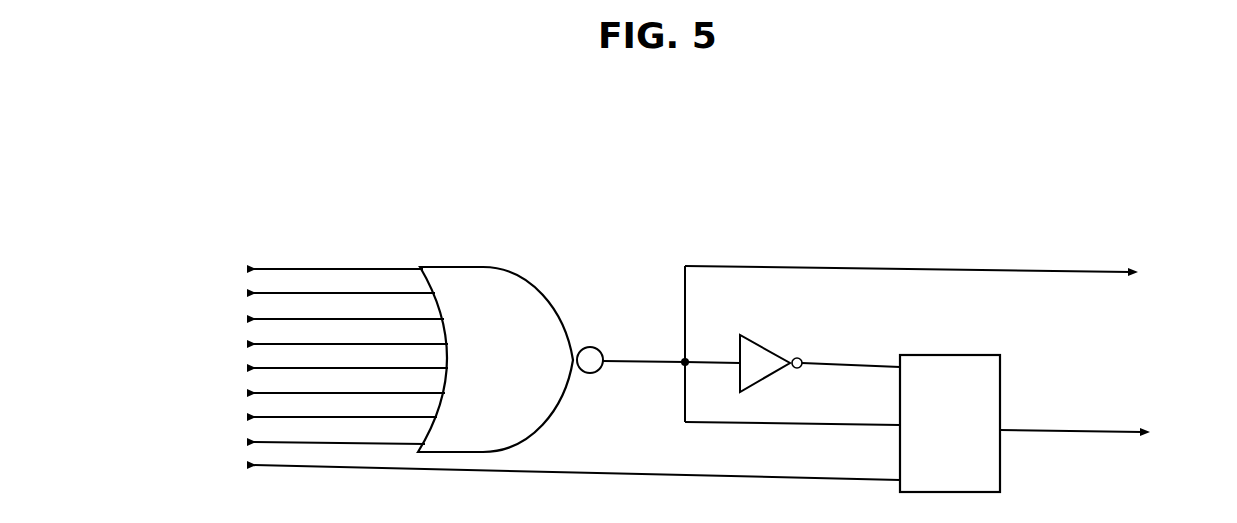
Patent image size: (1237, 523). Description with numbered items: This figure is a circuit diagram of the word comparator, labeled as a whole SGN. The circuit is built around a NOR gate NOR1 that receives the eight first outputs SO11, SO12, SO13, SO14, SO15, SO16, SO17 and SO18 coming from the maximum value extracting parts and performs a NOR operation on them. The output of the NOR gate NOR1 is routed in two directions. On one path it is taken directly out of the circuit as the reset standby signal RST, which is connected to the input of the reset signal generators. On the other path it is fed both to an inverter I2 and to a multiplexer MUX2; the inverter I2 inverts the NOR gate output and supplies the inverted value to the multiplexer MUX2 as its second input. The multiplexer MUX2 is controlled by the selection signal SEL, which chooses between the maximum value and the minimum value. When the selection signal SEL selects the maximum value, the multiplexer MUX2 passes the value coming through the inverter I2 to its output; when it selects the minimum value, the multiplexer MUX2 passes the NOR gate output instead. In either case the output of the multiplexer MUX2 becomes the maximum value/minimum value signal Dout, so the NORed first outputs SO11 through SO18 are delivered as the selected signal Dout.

The signal generating circuit SGN is at (832, 183).
The first output SO11 is at (302, 269).
The first output SO12 is at (308, 293).
The first output SO13 is at (313, 319).
The first output SO14 is at (315, 344).
The first output SO15 is at (315, 368).
The first output SO16 is at (313, 393).
The first output SO17 is at (309, 417).
The first output SO18 is at (303, 442).
The selection signal SEL is at (540, 467).
The NOR gate NOR1 is at (510, 359).
The inverter I2 is at (771, 356).
The multiplexer MUX2 is at (950, 423).
The reset standby signal RST is at (938, 273).
The maximum value/minimum value signal Dout is at (1107, 433).